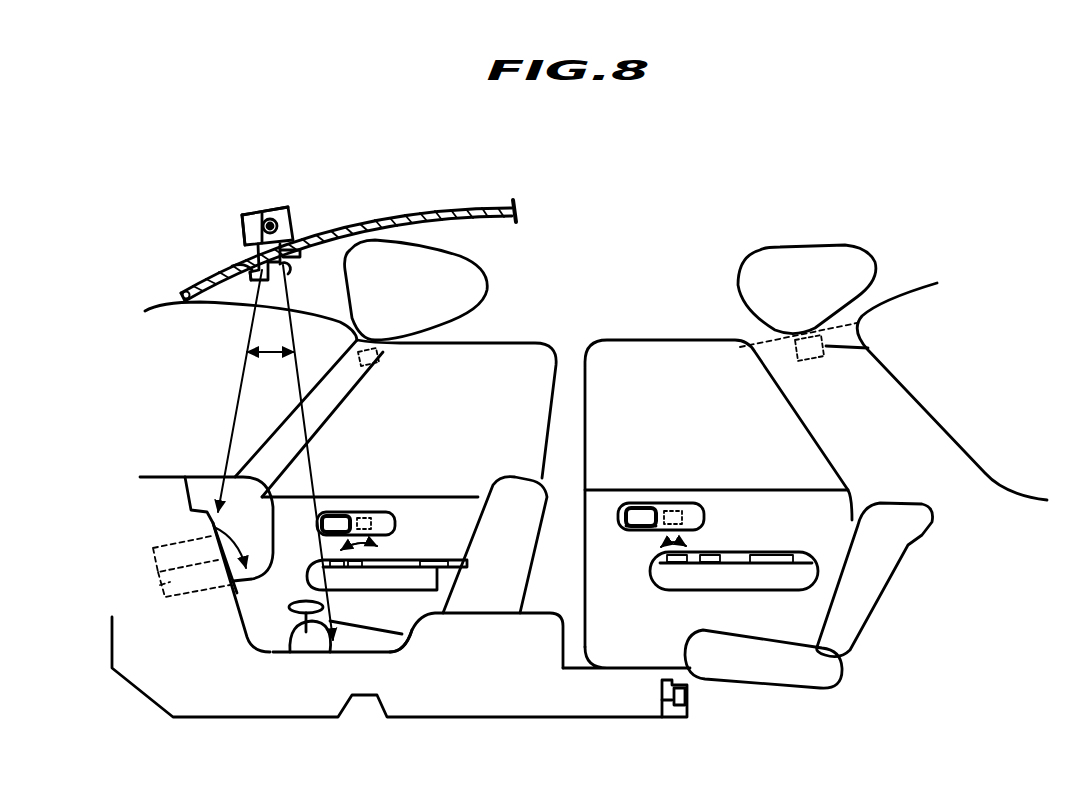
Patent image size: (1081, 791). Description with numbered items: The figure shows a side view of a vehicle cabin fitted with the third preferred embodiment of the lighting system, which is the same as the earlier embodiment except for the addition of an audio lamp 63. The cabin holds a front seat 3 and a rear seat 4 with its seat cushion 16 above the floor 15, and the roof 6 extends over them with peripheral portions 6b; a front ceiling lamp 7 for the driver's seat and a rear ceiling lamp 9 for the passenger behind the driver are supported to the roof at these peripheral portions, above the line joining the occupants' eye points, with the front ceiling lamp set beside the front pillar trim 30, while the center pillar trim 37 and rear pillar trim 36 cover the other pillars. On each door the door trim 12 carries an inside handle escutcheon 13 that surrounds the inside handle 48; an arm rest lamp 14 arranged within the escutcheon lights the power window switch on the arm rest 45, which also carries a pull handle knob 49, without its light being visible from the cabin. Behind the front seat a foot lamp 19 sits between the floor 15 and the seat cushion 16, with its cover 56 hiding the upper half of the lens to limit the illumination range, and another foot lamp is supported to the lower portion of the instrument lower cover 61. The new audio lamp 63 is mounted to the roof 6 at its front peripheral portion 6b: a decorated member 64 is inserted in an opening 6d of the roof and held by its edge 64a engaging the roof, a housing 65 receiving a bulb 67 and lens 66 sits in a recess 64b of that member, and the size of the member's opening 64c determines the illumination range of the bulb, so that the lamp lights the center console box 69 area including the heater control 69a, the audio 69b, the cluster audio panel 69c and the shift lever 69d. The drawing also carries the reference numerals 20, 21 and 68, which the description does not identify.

The front seat 3 is at (550, 497).
The rear seat 4 is at (885, 617).
The roof 6 is at (465, 206).
The peripheral portion 6b is at (143, 312).
The opening 6d is at (245, 263).
The front ceiling lamp 7 is at (380, 372).
The rear ceiling lamp 9 is at (877, 347).
The door trim 12 is at (460, 490).
The inside handle escutcheon 13 is at (350, 512).
The arm rest lamp 14 is at (398, 490).
The floor 15 is at (552, 722).
The seat cushion 16 is at (813, 675).
The foot lamp 19 is at (692, 700).
The headrest 20 is at (467, 279).
The switch 21 is at (383, 548).
The front pillar trim 30 is at (327, 403).
The rear pillar trim 36 is at (897, 400).
The center pillar trim 37 is at (573, 400).
The arm rest 45 is at (253, 642).
The inside handle 48 is at (622, 522).
The pull handle knob 49 is at (437, 565).
The cover 56 is at (660, 690).
The instrument lower cover 61 is at (211, 530).
The audio lamp 63 is at (259, 185).
The decorated member 64 is at (254, 280).
The edge 64a is at (250, 284).
The recess 64b is at (290, 210).
The opening 64c is at (287, 268).
The housing 65 is at (270, 218).
The lens 66 is at (243, 238).
The bulb 67 is at (240, 217).
The field of view 68 is at (270, 357).
The center console box 69 is at (445, 675).
The heater control 69a is at (153, 548).
The audio 69b is at (160, 586).
The cluster audio panel 69c is at (227, 612).
The shift lever 69d is at (305, 640).